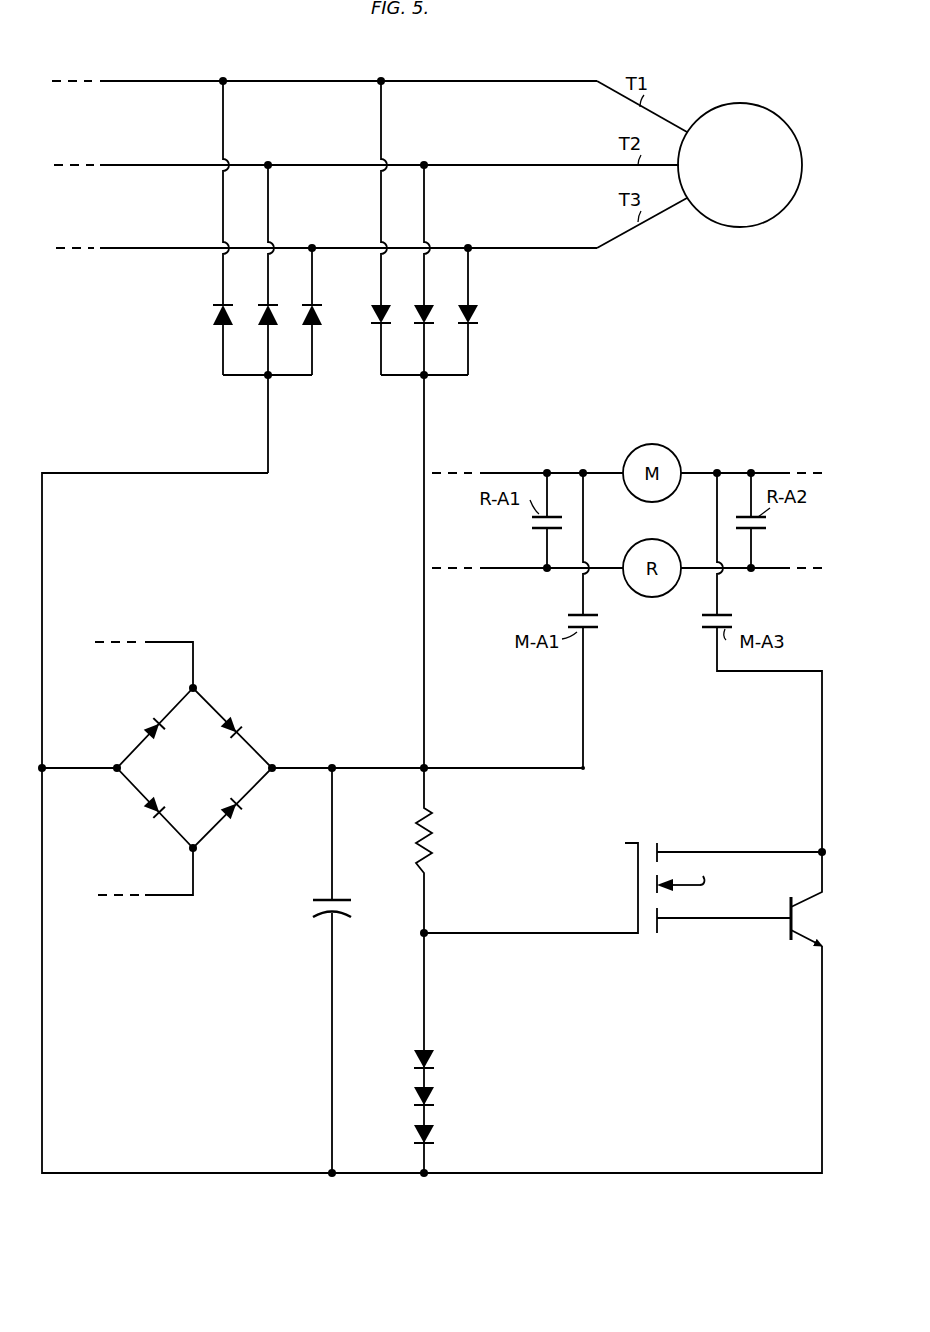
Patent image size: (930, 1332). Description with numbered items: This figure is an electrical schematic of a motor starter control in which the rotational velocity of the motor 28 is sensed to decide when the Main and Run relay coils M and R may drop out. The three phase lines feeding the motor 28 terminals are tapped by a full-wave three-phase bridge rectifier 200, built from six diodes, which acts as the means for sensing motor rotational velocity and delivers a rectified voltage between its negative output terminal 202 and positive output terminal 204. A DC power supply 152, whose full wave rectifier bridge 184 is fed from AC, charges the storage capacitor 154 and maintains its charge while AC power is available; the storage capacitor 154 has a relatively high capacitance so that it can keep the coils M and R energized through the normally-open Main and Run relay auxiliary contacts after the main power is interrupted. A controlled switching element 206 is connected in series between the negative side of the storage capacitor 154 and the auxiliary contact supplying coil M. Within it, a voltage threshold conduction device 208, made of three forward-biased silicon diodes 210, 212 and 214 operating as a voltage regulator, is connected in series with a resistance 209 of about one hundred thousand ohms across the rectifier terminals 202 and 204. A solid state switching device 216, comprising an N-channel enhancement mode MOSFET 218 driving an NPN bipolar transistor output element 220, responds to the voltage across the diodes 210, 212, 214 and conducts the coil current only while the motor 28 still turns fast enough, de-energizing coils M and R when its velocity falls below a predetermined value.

The motor 28 is at (768, 112).
The full-wave three-phase bridge rectifier 200 is at (398, 422).
The negative output terminal 202 is at (265, 378).
The positive output terminal 204 is at (422, 378).
The DC power supply 152 is at (310, 879).
The full wave rectifier bridge 184 is at (181, 771).
The storage capacitor 154 is at (336, 900).
The resistance 209 is at (428, 840).
The controlled switching element 206 is at (625, 843).
The solid state switching device 216 is at (704, 830).
The N-channel enhancement mode MOSFET 218 is at (638, 877).
The NPN bipolar transistor output element 220 is at (790, 937).
The voltage threshold conduction device 208 is at (495, 1090).
The silicon diode 210 is at (430, 1052).
The silicon diode 212 is at (430, 1090).
The silicon diode 214 is at (430, 1128).